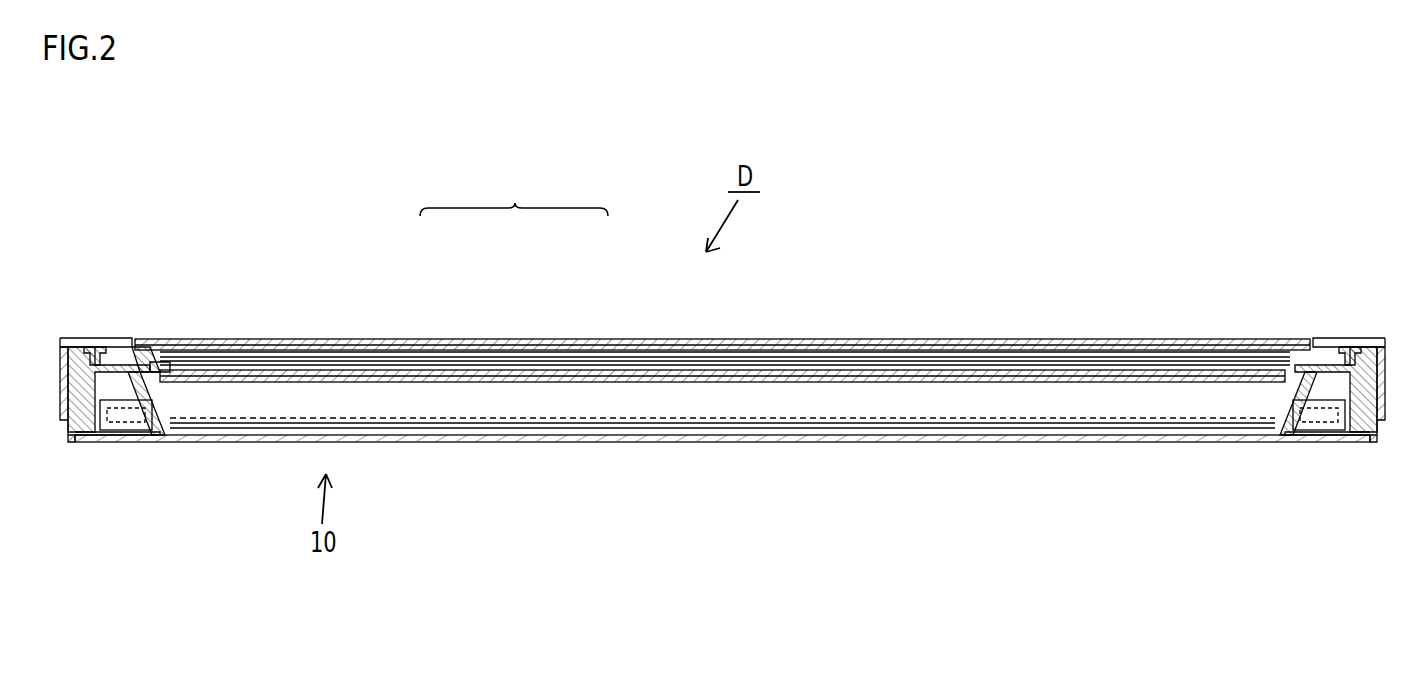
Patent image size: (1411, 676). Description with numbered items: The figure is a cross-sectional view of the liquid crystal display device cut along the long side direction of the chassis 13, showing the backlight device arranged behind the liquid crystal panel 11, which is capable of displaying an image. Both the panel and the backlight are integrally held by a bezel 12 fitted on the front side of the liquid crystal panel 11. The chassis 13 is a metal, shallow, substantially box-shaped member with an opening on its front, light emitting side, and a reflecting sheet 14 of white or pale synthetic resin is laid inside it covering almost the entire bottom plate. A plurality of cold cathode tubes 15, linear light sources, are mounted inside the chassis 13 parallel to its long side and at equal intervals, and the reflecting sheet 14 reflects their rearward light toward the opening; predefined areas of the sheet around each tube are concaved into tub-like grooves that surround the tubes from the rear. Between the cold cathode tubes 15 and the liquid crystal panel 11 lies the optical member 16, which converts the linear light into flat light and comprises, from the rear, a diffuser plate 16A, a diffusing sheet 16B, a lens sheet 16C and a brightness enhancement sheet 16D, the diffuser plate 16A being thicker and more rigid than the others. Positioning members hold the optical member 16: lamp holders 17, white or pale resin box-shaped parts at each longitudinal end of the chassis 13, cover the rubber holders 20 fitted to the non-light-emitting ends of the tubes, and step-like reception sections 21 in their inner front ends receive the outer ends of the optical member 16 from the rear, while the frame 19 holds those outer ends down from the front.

The liquid crystal panel 11 is at (329, 342).
The bezel 12 is at (150, 347).
The chassis 13 is at (648, 442).
The reflecting sheet 14 is at (380, 425).
The cold cathode tube 15 is at (497, 428).
The optical member 16 is at (725, 273).
The diffuser plate 16A is at (539, 381).
The diffusing sheet 16B is at (509, 379).
The lens sheet 16C is at (475, 376).
The brightness enhancement sheet 16D is at (429, 372).
The lamp holder 17 is at (95, 347).
The frame 19 is at (165, 362).
The rubber holder 20 is at (104, 432).
The step-like reception section 21 is at (130, 372).